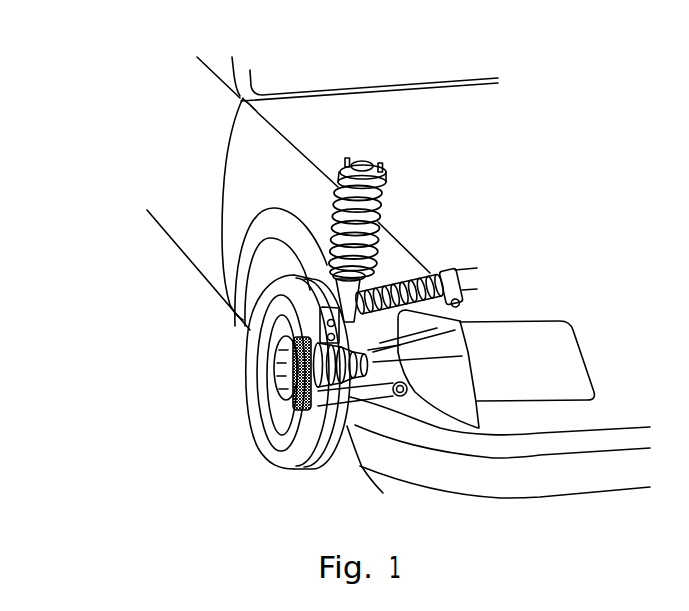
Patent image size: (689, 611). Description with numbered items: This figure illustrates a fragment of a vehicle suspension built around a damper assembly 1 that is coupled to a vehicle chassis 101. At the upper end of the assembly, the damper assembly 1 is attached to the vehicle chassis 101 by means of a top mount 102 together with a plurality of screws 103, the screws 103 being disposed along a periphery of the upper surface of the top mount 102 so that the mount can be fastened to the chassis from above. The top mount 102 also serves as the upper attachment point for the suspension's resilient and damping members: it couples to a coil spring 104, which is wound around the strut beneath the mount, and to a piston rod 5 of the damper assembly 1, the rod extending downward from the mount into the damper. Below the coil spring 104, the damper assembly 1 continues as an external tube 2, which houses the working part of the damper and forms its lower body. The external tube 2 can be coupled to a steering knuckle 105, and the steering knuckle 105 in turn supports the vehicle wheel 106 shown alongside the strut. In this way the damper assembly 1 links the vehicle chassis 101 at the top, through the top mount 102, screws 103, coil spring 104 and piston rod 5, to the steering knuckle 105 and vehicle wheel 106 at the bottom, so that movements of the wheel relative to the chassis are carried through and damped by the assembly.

The damper assembly 1 is at (368, 213).
The external tube 2 is at (323, 262).
The piston rod 5 is at (383, 230).
The vehicle chassis 101 is at (240, 100).
The top mount 102 is at (385, 182).
The plurality of screws 103 is at (350, 158).
The coil spring 104 is at (383, 210).
The steering knuckle 105 is at (300, 332).
The vehicle wheel 106 is at (283, 442).